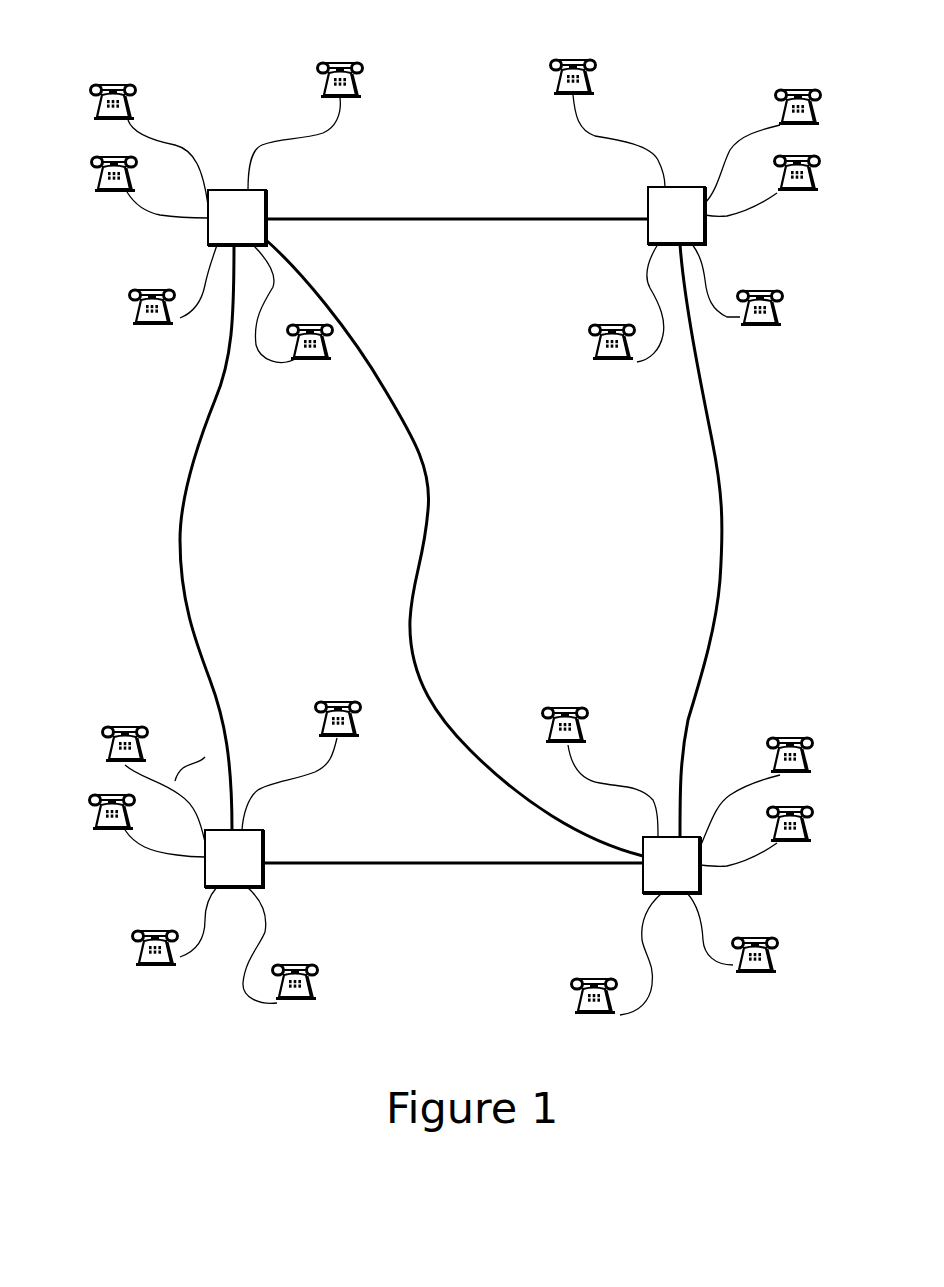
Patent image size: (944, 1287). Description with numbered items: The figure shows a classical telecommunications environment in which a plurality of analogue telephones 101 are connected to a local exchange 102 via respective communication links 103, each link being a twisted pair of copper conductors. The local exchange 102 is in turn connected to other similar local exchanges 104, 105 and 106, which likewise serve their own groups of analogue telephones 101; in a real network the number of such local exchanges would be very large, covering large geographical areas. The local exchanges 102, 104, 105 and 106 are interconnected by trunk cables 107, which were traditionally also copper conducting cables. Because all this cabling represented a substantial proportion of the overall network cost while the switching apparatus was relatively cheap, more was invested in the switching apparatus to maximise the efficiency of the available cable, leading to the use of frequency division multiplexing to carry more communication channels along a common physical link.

The analogue telephone 101 is at (132, 88).
The local exchange 102 is at (266, 217).
The communication link 103 is at (164, 214).
The local exchange 104 is at (663, 210).
The local exchange 105 is at (252, 850).
The local exchange 106 is at (655, 878).
The trunk cable 107 is at (460, 217).